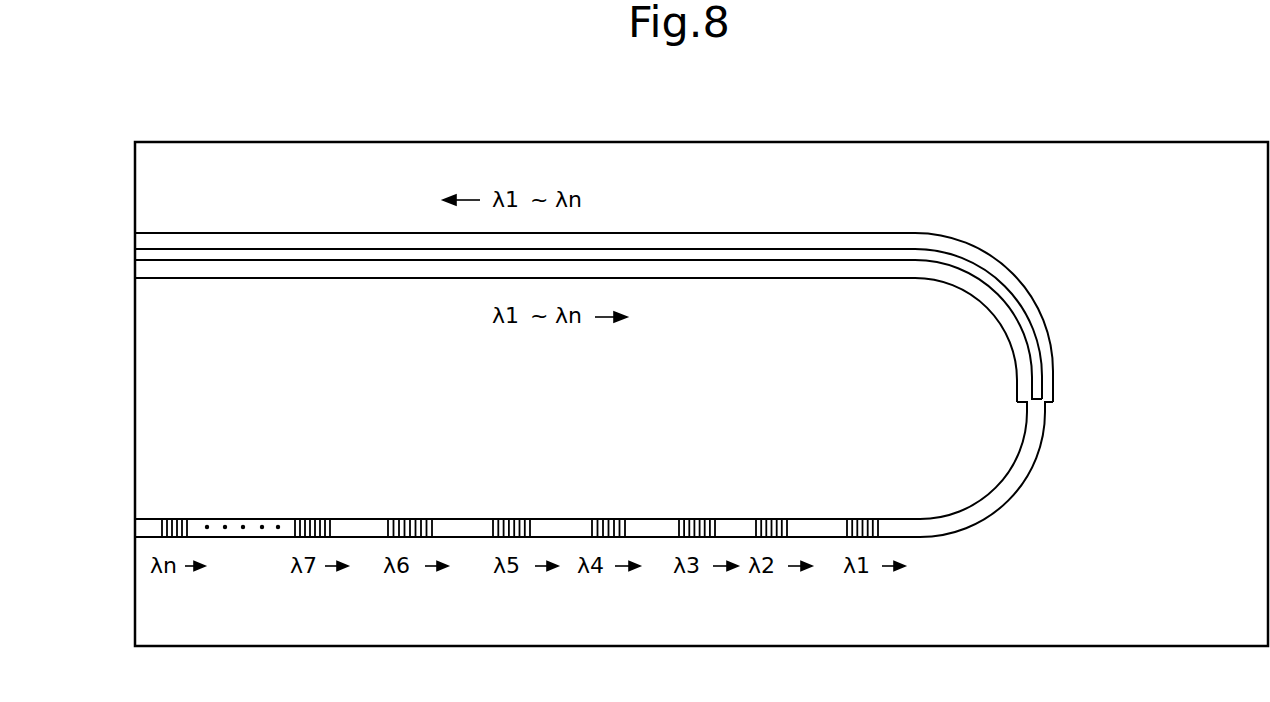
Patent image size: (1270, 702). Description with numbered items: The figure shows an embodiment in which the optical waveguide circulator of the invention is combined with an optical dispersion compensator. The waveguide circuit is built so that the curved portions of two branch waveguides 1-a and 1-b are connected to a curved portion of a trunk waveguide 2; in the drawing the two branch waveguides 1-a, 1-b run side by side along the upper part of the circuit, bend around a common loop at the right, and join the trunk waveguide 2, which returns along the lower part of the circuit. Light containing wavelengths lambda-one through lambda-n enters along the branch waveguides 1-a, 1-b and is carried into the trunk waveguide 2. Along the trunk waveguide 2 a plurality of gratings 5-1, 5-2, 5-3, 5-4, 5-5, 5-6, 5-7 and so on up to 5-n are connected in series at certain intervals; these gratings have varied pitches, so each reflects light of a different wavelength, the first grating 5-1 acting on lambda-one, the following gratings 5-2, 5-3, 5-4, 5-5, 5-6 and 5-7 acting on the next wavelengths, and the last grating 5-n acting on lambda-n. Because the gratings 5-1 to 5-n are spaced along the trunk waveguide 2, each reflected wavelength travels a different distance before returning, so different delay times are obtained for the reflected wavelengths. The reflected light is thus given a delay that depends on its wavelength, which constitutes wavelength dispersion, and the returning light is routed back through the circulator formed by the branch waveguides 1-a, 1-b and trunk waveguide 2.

The branch waveguide 1-a is at (978, 262).
The branch waveguide 1-b is at (420, 265).
The trunk waveguide 2 is at (822, 530).
The grating 5-1 is at (862, 517).
The grating 5-2 is at (783, 517).
The grating 5-3 is at (703, 517).
The grating 5-4 is at (617, 517).
The grating 5-5 is at (516, 517).
The grating 5-6 is at (417, 517).
The grating 5-7 is at (315, 517).
The grating 5-n is at (176, 517).